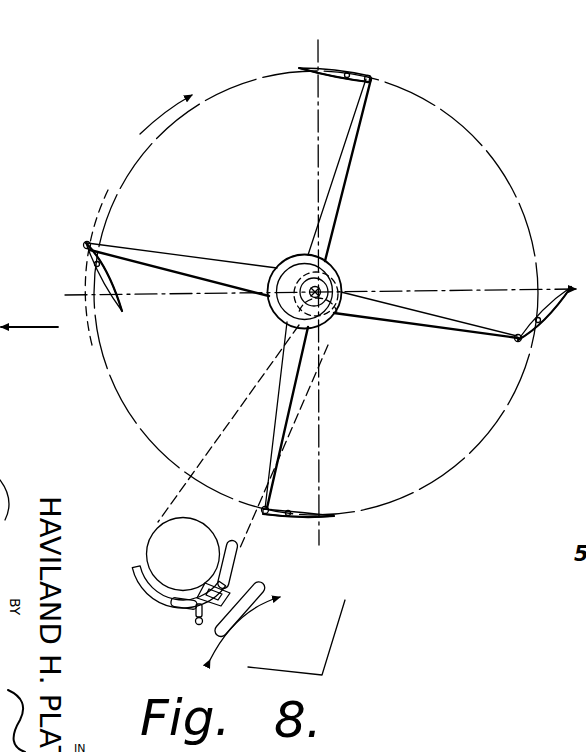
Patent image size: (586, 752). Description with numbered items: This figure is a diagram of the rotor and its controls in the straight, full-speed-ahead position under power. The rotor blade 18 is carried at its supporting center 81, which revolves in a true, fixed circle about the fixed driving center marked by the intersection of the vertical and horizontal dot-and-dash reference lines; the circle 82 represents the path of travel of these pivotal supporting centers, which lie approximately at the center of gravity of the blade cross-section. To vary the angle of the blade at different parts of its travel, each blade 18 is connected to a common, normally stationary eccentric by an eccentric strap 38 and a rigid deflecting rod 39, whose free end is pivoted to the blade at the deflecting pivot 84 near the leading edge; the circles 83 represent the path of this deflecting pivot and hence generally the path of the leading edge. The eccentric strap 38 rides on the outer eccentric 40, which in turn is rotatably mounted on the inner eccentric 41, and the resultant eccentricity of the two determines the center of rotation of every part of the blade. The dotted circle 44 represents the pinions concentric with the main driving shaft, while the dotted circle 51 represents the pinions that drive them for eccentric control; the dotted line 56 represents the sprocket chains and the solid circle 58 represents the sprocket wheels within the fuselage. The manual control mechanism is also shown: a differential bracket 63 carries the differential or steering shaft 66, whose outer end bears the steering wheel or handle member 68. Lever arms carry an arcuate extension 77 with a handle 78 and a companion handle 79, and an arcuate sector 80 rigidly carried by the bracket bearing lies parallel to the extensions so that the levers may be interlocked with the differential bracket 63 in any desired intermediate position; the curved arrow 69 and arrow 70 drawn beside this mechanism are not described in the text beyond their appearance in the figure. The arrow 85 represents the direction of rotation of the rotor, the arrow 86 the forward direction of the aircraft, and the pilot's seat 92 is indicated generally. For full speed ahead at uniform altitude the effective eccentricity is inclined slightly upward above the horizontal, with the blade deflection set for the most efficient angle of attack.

The blade 18 is at (318, 74).
The eccentric strap 38 is at (331, 269).
The deflecting rod 39 is at (429, 318).
The outer eccentric 40 is at (293, 265).
The inner eccentric 41 is at (296, 282).
The pinion 44 is at (341, 288).
The pinion 51 is at (322, 340).
The sprocket chain 56 is at (238, 416).
The sprocket wheel 58 is at (147, 551).
The differential bracket 63 is at (183, 554).
The differential or steering shaft 66 is at (272, 605).
The steering wheel or handle member 68 is at (258, 590).
The direction arrow 69 is at (182, 664).
The direction arrow 70 is at (257, 618).
The arcuate extension 77 is at (228, 546).
The handle 78 is at (199, 616).
The handle 79 is at (176, 606).
The arcuate sector 80 is at (133, 570).
The supporting center 81 is at (344, 80).
The circle 82 is at (201, 105).
The circle 83 is at (108, 199).
The deflecting pivot 84 is at (373, 79).
The arrow 85 is at (163, 114).
The arrow 86 is at (29, 342).
The pilot's seat 92 is at (296, 637).